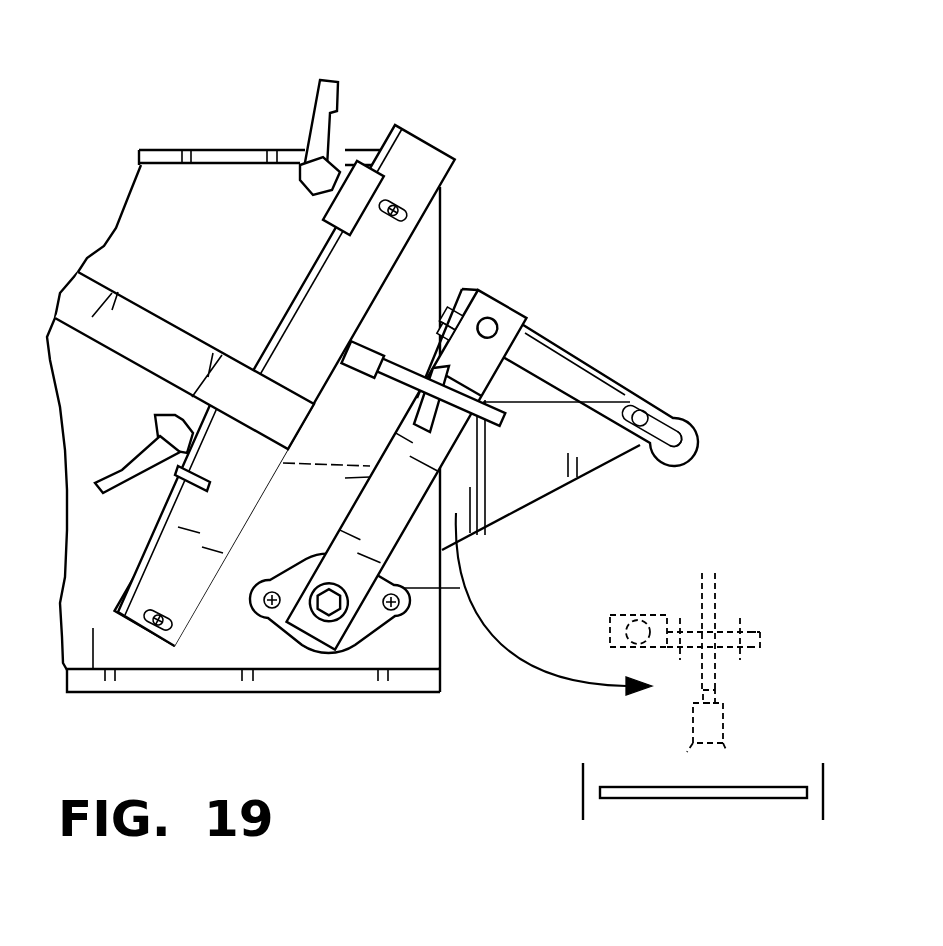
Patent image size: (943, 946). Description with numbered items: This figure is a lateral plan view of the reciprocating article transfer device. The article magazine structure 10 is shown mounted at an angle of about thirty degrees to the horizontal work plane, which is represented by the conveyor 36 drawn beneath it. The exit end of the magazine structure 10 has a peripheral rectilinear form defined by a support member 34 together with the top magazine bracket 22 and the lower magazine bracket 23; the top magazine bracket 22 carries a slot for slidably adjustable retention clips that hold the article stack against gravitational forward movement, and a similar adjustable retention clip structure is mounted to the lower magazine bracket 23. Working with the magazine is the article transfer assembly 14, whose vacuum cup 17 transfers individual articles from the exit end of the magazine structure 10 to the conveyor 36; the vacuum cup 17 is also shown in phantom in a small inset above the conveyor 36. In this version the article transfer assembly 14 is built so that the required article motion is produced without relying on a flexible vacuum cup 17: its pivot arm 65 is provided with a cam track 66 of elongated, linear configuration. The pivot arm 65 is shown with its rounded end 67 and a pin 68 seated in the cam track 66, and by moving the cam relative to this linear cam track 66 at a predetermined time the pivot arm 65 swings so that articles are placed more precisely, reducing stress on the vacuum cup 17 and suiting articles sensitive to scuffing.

The article magazine structure 10 is at (364, 59).
The article transfer assembly 14 is at (680, 338).
The vacuum cup 17 is at (363, 350).
The top magazine bracket 22 is at (451, 226).
The lower magazine bracket 23 is at (200, 665).
The support member 34 is at (342, 292).
The conveyor 36 is at (630, 820).
The pivot arm 65 is at (646, 408).
The cam track 66 is at (568, 374).
The arm end 67 is at (667, 440).
The pin 68 is at (653, 420).